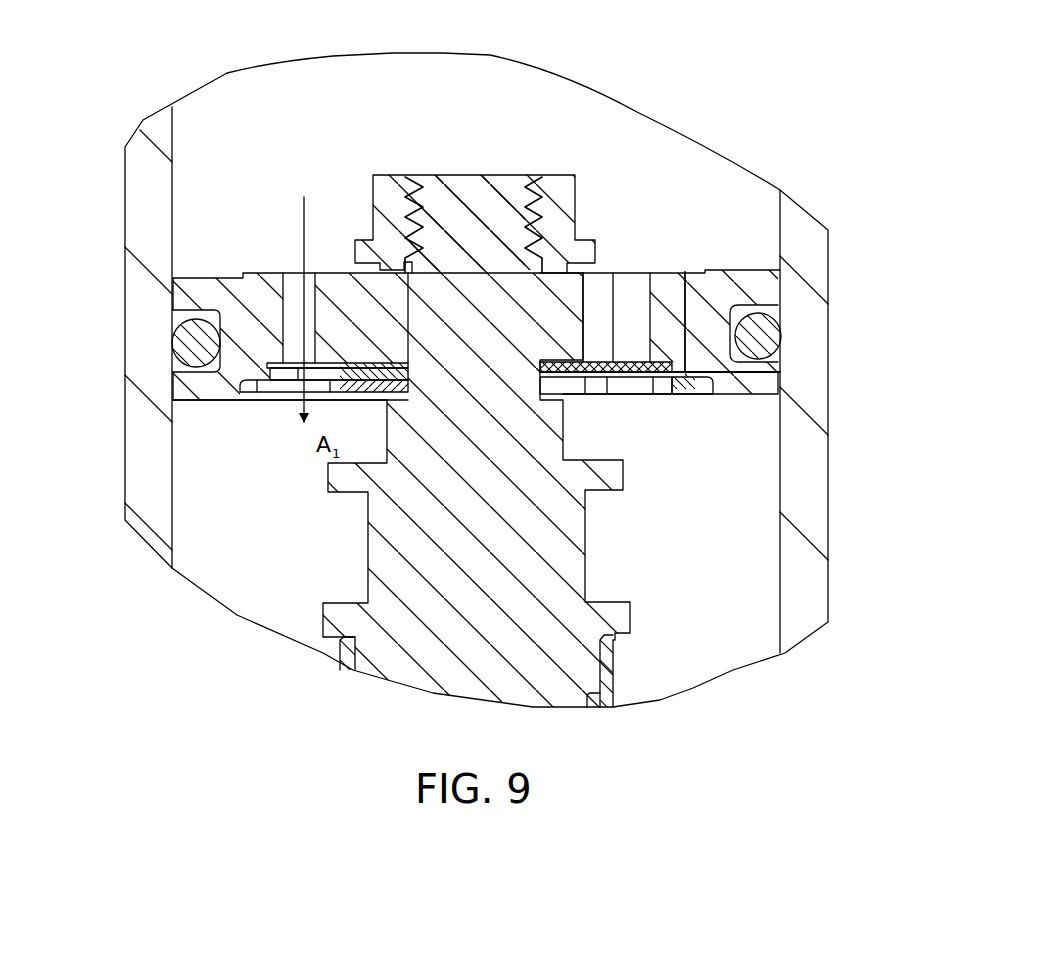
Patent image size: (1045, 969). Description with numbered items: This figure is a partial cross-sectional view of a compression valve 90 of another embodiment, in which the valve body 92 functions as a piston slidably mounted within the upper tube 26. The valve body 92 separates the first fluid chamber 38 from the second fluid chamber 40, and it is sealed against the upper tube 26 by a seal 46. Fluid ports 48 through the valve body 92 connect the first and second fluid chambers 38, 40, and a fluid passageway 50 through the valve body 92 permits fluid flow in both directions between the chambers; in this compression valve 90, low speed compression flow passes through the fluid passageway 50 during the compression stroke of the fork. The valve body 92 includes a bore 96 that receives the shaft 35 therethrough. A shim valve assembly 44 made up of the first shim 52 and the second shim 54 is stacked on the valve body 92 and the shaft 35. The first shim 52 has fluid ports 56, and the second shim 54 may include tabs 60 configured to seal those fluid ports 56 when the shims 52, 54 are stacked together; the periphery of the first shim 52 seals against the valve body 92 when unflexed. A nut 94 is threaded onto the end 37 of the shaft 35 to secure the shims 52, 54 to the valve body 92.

The upper tube 26 is at (808, 498).
The shaft 35 is at (578, 630).
The end of the shaft 37 is at (522, 183).
The first fluid chamber 38 is at (705, 192).
The second fluid chamber 40 is at (750, 565).
The shim valve assembly 44 is at (266, 423).
The seal 46 is at (187, 345).
The fluid ports 48 is at (660, 294).
The fluid passageway 50 is at (293, 303).
The first shim 52 is at (697, 395).
The second shim 54 is at (353, 377).
The fluid ports 56 is at (627, 382).
The tabs 60 is at (735, 373).
The valve 90 is at (806, 345).
The valve body 92 is at (740, 294).
The nut 94 is at (560, 197).
The bore 96 is at (408, 333).